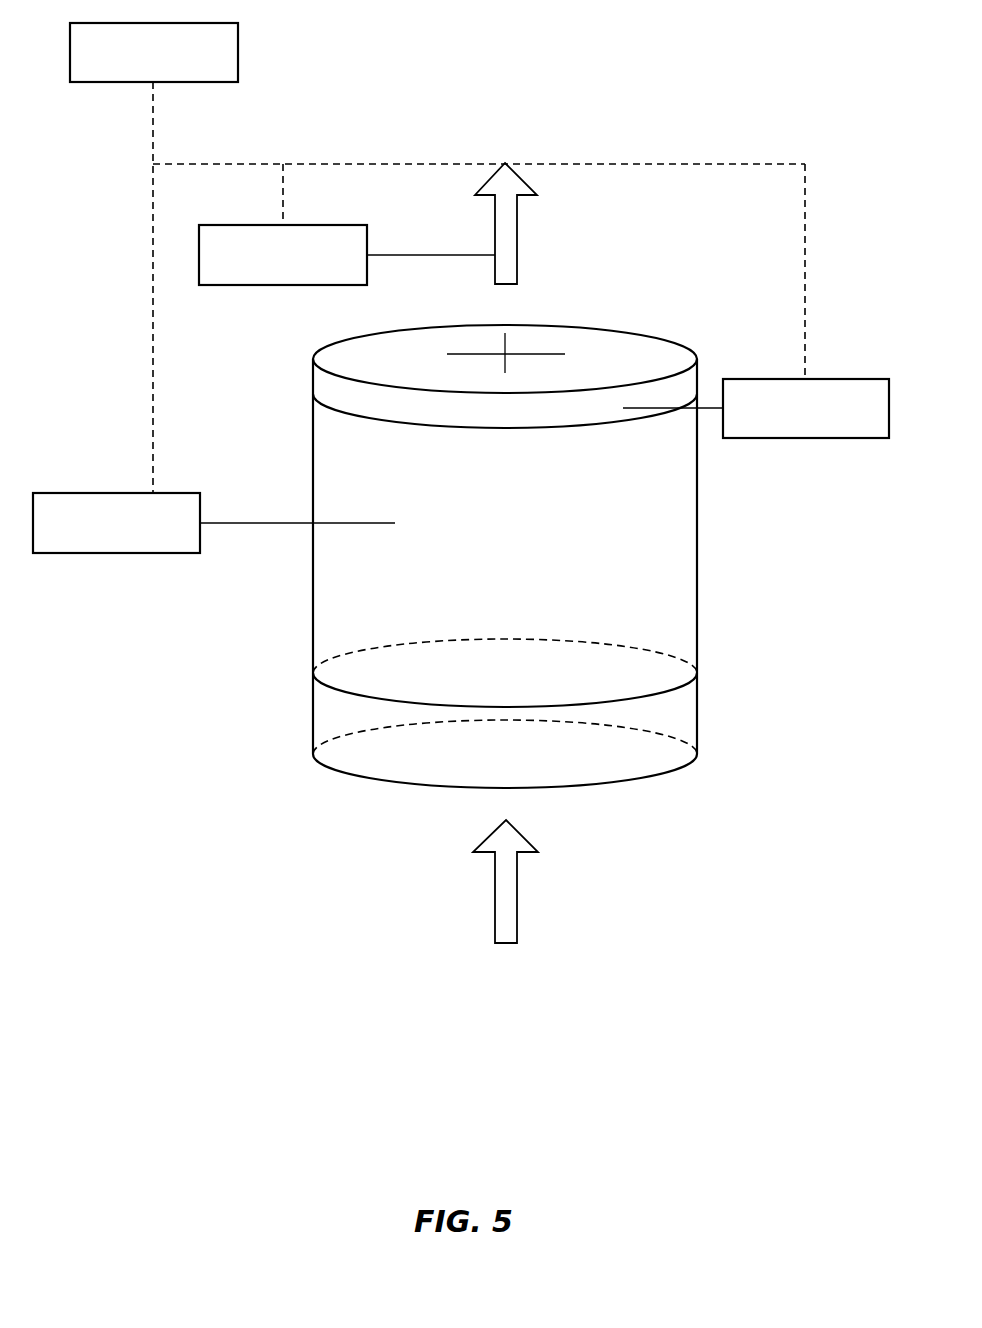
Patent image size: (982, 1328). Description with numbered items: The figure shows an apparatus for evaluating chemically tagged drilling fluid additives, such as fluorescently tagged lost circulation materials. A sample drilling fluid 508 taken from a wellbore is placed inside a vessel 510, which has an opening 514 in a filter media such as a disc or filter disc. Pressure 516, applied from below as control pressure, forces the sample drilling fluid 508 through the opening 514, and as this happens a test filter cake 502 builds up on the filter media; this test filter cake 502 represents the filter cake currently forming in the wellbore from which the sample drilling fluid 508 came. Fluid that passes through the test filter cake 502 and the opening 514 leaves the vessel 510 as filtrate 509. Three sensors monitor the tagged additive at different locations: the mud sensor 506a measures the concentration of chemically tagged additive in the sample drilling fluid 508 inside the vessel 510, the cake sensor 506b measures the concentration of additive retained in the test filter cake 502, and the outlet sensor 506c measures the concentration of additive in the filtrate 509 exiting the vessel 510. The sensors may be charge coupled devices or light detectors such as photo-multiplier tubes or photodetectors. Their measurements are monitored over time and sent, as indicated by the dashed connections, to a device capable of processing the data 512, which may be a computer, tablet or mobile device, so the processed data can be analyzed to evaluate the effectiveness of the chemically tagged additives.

The test filter cake 502 is at (313, 383).
The mud sensor 506a is at (214, 523).
The cake sensor 506b is at (756, 408).
The outlet sensor 506c is at (347, 255).
The sample drilling fluid 508 is at (673, 513).
The filtrate 509 is at (518, 226).
The vessel 510 is at (697, 600).
The device capable of processing the data 512 is at (154, 52).
The opening 514 is at (505, 354).
The pressure 516 is at (517, 925).